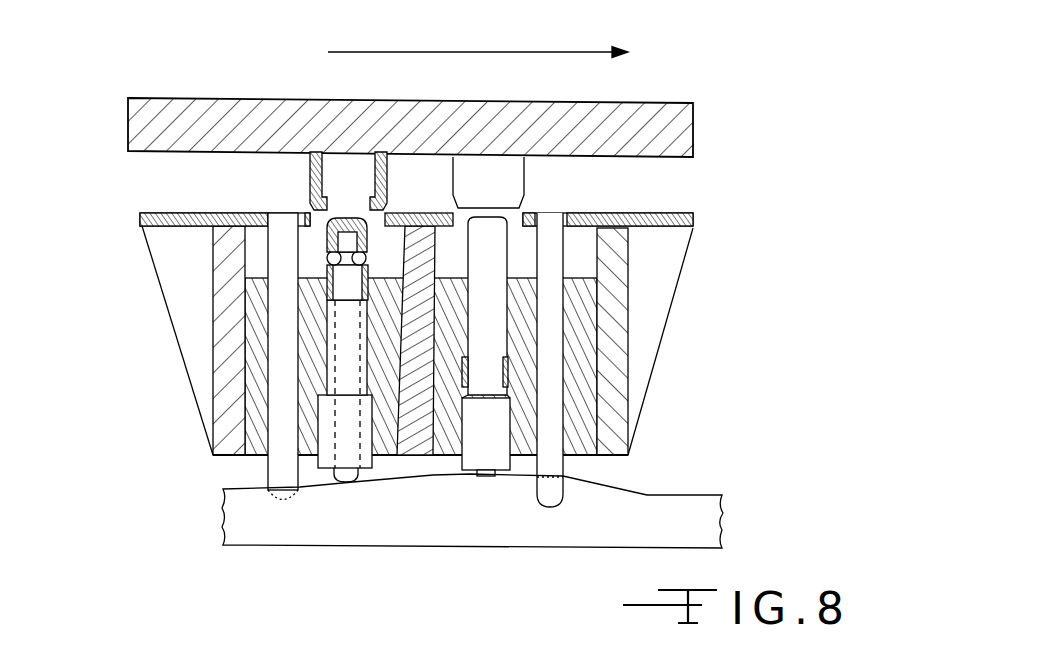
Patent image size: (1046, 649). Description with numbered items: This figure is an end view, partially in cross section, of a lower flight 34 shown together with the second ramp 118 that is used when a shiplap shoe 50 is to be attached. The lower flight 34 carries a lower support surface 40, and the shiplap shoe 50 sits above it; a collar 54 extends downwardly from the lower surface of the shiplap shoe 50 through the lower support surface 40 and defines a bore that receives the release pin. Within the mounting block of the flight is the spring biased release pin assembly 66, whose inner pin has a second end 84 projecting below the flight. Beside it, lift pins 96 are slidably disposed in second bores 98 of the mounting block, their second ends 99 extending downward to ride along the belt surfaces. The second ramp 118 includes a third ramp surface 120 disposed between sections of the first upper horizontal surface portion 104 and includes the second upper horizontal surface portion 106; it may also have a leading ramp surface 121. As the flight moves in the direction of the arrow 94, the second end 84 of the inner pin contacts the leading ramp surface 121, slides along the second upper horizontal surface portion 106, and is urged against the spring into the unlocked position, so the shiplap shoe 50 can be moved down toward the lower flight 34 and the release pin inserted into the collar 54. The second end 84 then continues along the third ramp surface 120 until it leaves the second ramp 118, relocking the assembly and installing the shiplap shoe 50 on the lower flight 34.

The lower flight 34 is at (138, 290).
The lower support surface 40 is at (195, 212).
The shiplap shoe 50 is at (655, 103).
The collar 54 is at (497, 172).
The spring biased release pin assembly 66 is at (374, 289).
The second end of the inner pin 84 is at (348, 483).
The direction of movement 94 is at (586, 51).
The lift pin 96 is at (553, 268).
The second bore 98 is at (570, 333).
The second end of the lift pin 99 is at (551, 508).
The first upper horizontal surface portion 104 is at (681, 488).
The second upper horizontal surface portion 106 is at (514, 452).
The second ramp 118 is at (208, 515).
The third ramp surface 120 is at (440, 464).
The leading ramp surface 121 is at (386, 470).